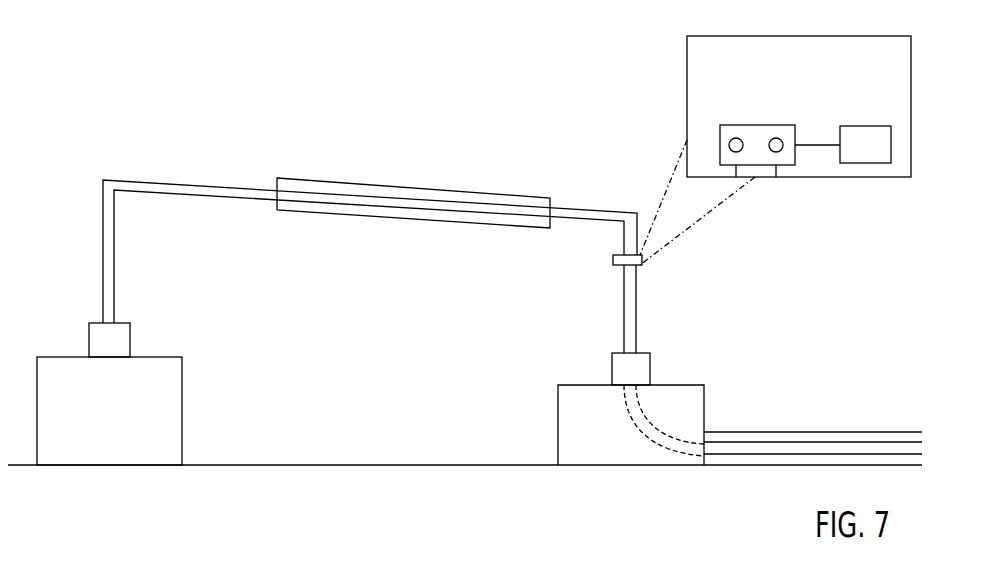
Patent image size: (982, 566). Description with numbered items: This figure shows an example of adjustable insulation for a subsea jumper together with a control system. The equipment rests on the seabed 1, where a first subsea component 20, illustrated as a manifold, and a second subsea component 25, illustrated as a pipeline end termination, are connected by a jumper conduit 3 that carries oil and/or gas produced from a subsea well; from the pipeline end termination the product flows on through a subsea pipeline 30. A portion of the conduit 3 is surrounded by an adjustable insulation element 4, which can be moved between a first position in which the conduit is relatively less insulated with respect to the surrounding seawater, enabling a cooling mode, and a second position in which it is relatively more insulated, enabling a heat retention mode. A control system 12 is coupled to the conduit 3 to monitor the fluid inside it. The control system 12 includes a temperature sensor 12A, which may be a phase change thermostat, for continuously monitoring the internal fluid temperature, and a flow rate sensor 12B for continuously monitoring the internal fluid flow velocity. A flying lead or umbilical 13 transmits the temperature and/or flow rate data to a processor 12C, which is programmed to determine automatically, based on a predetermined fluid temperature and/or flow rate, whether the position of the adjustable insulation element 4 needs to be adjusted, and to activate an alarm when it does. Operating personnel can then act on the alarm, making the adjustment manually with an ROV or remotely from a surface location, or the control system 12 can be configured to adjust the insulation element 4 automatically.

The seabed 1 is at (335, 460).
The supply pipe 3 is at (580, 206).
The adjustable insulation element 4 is at (467, 189).
The control system 12 is at (775, 150).
The temperature sensor 12A is at (741, 140).
The flow rate sensor 12B is at (778, 138).
The processor 12C is at (865, 144).
The flying lead or umbilical 13 is at (818, 145).
The first subsea component 20 is at (109, 394).
The second subsea component 25 is at (683, 385).
The subsea pipeline 30 is at (818, 432).